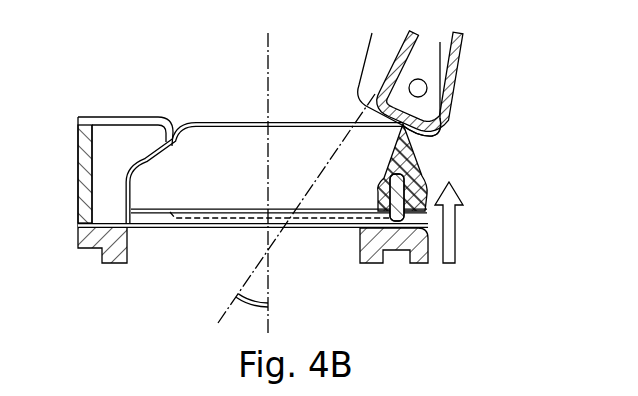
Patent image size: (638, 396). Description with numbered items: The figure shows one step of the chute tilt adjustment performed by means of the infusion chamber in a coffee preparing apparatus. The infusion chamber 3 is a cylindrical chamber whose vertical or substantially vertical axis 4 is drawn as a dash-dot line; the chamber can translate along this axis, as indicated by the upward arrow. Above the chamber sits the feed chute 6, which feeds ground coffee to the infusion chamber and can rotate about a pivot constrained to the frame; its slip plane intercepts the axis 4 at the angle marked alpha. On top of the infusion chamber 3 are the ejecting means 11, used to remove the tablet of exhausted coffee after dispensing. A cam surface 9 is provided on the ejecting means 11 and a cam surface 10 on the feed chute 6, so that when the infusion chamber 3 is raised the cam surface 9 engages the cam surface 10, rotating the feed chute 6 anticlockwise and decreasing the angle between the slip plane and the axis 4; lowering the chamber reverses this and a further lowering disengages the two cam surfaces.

The infusion chamber 3 is at (118, 257).
The axis 4 is at (270, 90).
The feed chute 6 is at (463, 70).
The cam surface 9 is at (423, 172).
The cam surface 10 is at (447, 127).
The ejecting means 11 is at (238, 140).